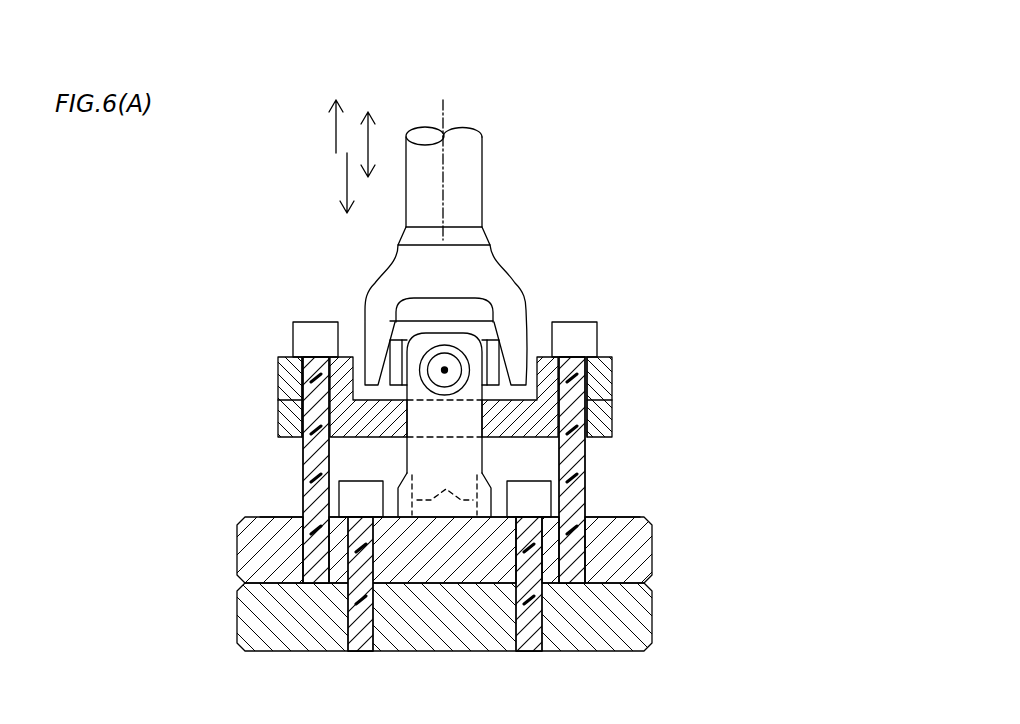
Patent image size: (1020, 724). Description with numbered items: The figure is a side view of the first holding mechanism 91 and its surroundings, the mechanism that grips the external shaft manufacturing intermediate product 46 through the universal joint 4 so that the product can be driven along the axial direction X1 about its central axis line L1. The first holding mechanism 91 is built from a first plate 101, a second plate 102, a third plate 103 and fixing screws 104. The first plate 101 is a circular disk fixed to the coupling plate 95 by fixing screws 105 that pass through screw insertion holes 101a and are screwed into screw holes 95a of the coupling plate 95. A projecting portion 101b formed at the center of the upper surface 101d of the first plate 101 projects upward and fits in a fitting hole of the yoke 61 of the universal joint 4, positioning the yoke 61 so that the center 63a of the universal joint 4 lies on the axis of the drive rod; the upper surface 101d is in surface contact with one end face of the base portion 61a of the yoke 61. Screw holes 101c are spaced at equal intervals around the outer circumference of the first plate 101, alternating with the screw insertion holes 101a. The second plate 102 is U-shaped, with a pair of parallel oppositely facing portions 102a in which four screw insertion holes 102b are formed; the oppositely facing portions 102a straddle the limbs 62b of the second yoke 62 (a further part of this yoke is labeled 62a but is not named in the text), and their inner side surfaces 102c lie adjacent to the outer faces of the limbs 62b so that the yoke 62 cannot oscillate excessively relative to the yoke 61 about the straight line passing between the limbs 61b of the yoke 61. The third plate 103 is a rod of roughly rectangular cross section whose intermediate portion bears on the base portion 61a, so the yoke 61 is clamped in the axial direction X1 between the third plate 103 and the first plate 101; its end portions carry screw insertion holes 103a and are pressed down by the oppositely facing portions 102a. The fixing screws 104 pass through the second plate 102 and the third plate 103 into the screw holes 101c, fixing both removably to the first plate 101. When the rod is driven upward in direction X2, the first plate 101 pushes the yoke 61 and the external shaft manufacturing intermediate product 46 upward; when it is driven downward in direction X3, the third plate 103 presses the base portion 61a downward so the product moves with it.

The universal joint 4 is at (388, 275).
The external shaft manufacturing intermediate product 46 is at (470, 182).
The yoke 61 is at (412, 457).
The base portion 61a is at (398, 492).
The limbs 61b is at (430, 430).
The yoke 62 is at (478, 267).
The yoke inner surface 62a is at (517, 320).
The limbs 62b is at (473, 321).
The center of the universal joint 63a is at (444, 370).
The first holding mechanism 91 is at (603, 388).
The coupling plate 95 is at (648, 625).
The screw holes 95a is at (530, 628).
The first plate 101 is at (645, 548).
The screw insertion holes 101a is at (530, 562).
The projecting portion 101b is at (447, 490).
The screw holes 101c is at (577, 553).
The upper surface 101d is at (613, 515).
The second plate 102 is at (603, 395).
The oppositely facing portions 102a is at (285, 378).
The screw insertion holes 102b is at (303, 393).
The inner side surfaces 102c is at (385, 350).
The third plate 103 is at (600, 417).
The screw insertion holes 103a is at (303, 440).
The fixing screws 104 is at (590, 333).
The fixing screws 105 is at (537, 498).
The axial direction X1 is at (377, 142).
The one direction of the axial direction X2 is at (330, 147).
The other direction of the axial direction X3 is at (341, 173).
The central axis line L1 is at (443, 156).